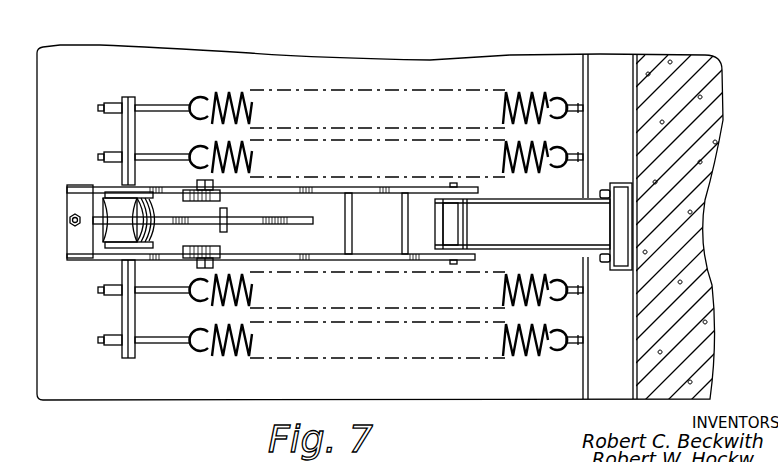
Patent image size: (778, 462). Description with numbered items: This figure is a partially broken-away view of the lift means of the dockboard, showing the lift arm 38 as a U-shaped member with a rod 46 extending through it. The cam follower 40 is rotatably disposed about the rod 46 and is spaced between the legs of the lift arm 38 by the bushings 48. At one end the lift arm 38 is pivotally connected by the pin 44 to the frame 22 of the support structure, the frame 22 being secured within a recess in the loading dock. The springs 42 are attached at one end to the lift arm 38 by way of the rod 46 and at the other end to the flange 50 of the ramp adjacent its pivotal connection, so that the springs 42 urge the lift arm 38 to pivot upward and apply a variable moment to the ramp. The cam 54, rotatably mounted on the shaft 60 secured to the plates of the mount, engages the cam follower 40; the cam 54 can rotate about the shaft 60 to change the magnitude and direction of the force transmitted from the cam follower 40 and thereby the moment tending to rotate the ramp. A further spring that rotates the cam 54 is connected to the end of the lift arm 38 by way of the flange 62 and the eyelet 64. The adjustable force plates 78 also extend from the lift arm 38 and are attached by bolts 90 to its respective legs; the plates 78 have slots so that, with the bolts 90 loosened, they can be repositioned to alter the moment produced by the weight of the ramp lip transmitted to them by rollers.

The frame 22 is at (610, 238).
The lift arm 38 is at (98, 187).
The cam follower 40 is at (100, 240).
The springs 42 is at (505, 150).
The pin 44 is at (452, 187).
The rod 46 is at (130, 98).
The bushings 48 is at (128, 192).
The flange 50 is at (590, 68).
The cam 54 is at (308, 227).
The shaft 60 is at (227, 228).
The flange 62 is at (67, 245).
The eyelet 64 is at (68, 220).
The adjustable force plates 78 is at (220, 198).
The bolts 90 is at (213, 186).